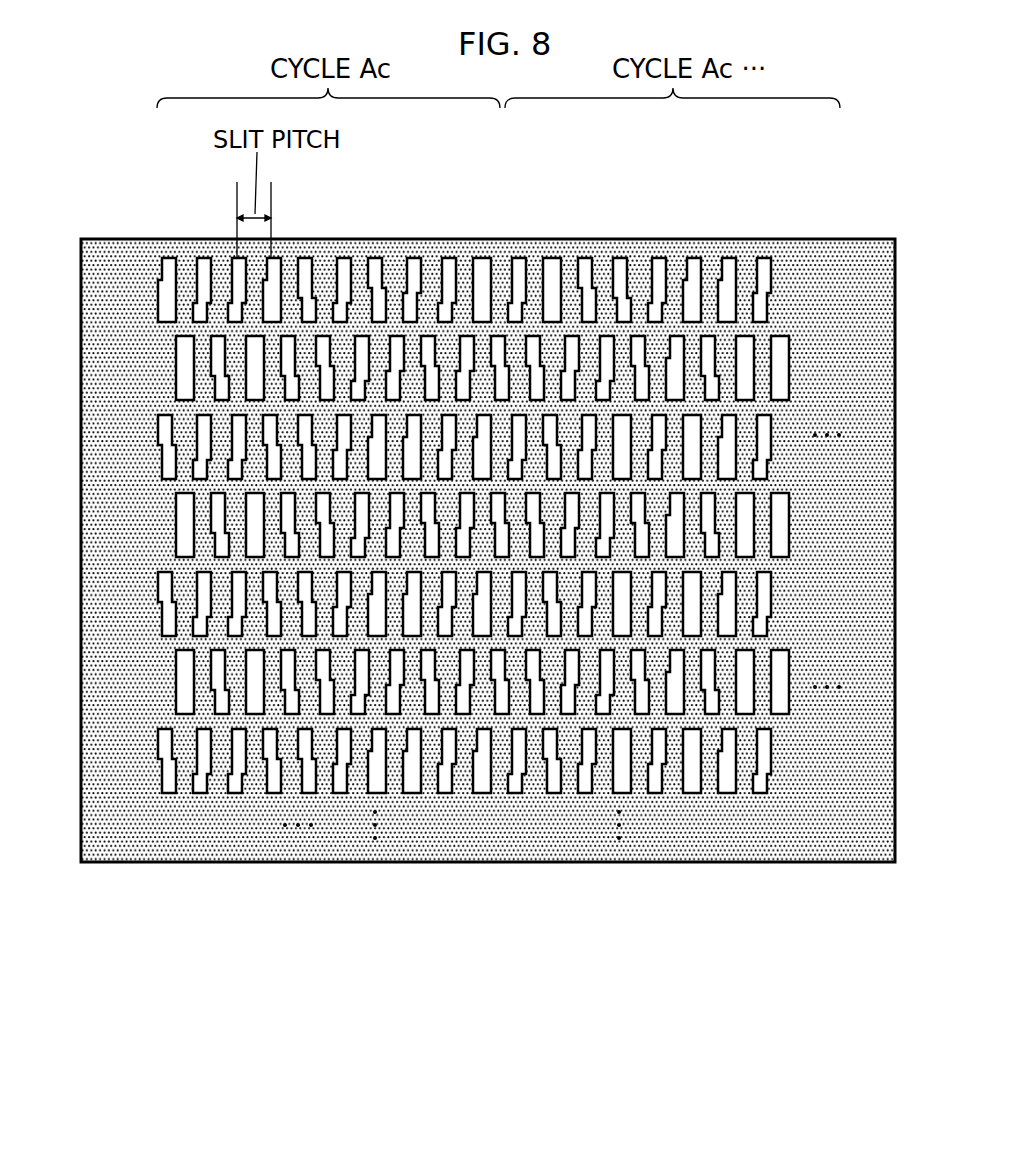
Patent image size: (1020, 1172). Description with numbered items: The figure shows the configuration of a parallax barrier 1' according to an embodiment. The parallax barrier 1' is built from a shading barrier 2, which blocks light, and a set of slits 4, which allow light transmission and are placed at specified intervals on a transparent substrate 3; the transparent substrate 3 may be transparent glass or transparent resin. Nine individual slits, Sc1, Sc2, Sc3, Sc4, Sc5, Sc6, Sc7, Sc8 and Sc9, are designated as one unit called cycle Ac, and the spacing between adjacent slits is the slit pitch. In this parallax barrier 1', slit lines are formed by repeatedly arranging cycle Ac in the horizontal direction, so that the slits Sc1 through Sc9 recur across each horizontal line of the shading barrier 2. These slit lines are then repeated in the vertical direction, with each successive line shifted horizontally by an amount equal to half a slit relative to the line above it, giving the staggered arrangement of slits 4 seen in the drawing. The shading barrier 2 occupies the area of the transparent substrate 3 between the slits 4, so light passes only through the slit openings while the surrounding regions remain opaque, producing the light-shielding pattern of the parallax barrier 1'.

The parallax barrier 1' is at (465, 592).
The shading barrier 2 is at (103, 326).
The transparent substrate 3 is at (80, 428).
The slits 4 is at (167, 795).
The slit Sc1 is at (162, 260).
The slit Sc2 is at (196, 260).
The slit Sc3 is at (232, 260).
The slit Sc4 is at (272, 262).
The slit Sc5 is at (320, 262).
The slit Sc6 is at (355, 260).
The slit Sc7 is at (390, 262).
The slit Sc8 is at (440, 262).
The slit Sc9 is at (482, 262).